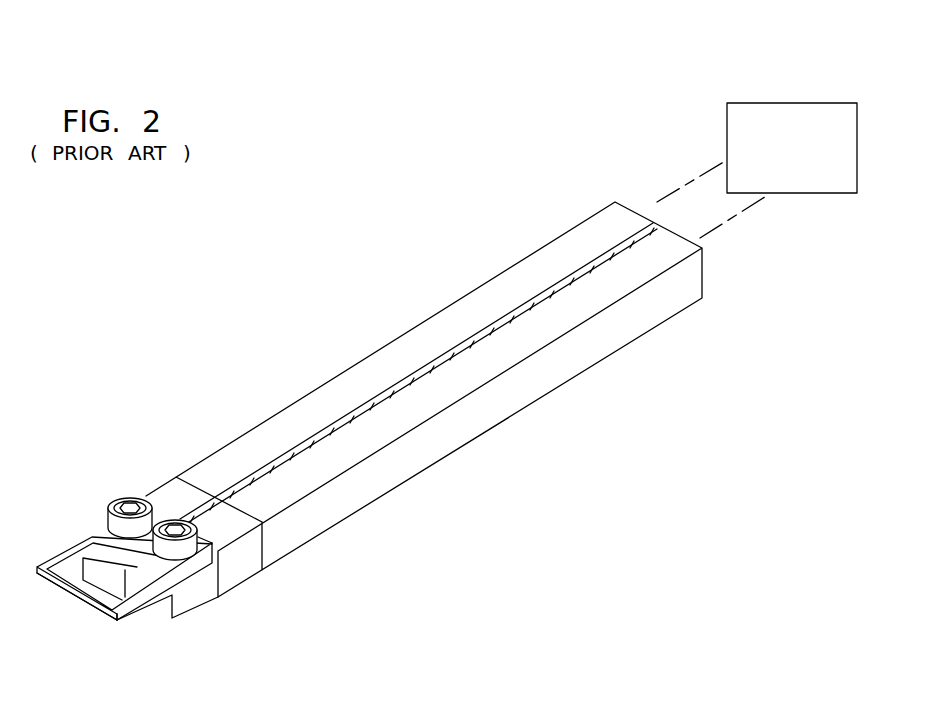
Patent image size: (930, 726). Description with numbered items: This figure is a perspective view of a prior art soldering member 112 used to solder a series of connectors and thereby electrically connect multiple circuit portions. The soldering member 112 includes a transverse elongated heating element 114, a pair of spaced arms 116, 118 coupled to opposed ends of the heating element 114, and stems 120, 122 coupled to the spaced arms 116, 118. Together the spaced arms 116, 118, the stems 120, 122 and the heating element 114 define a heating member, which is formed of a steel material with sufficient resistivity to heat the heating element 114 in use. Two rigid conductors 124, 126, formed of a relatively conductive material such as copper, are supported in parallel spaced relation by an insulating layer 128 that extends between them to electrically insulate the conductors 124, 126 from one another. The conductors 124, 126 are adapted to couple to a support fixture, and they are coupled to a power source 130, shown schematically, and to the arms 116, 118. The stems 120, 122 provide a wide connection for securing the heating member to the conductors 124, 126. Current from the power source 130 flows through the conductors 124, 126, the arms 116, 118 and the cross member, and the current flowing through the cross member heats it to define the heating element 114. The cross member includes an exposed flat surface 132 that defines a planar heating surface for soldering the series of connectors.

The soldering member 112 is at (71, 528).
The heating element 114 is at (77, 591).
The spaced arm 116 is at (48, 557).
The spaced arm 118 is at (127, 608).
The stem 120 is at (97, 528).
The stem 122 is at (203, 562).
The rigid conductor 124 is at (498, 275).
The rigid conductor 126 is at (490, 355).
The insulating layer 128 is at (345, 414).
The power source 130 is at (797, 102).
The exposed flat surface 132 is at (106, 618).